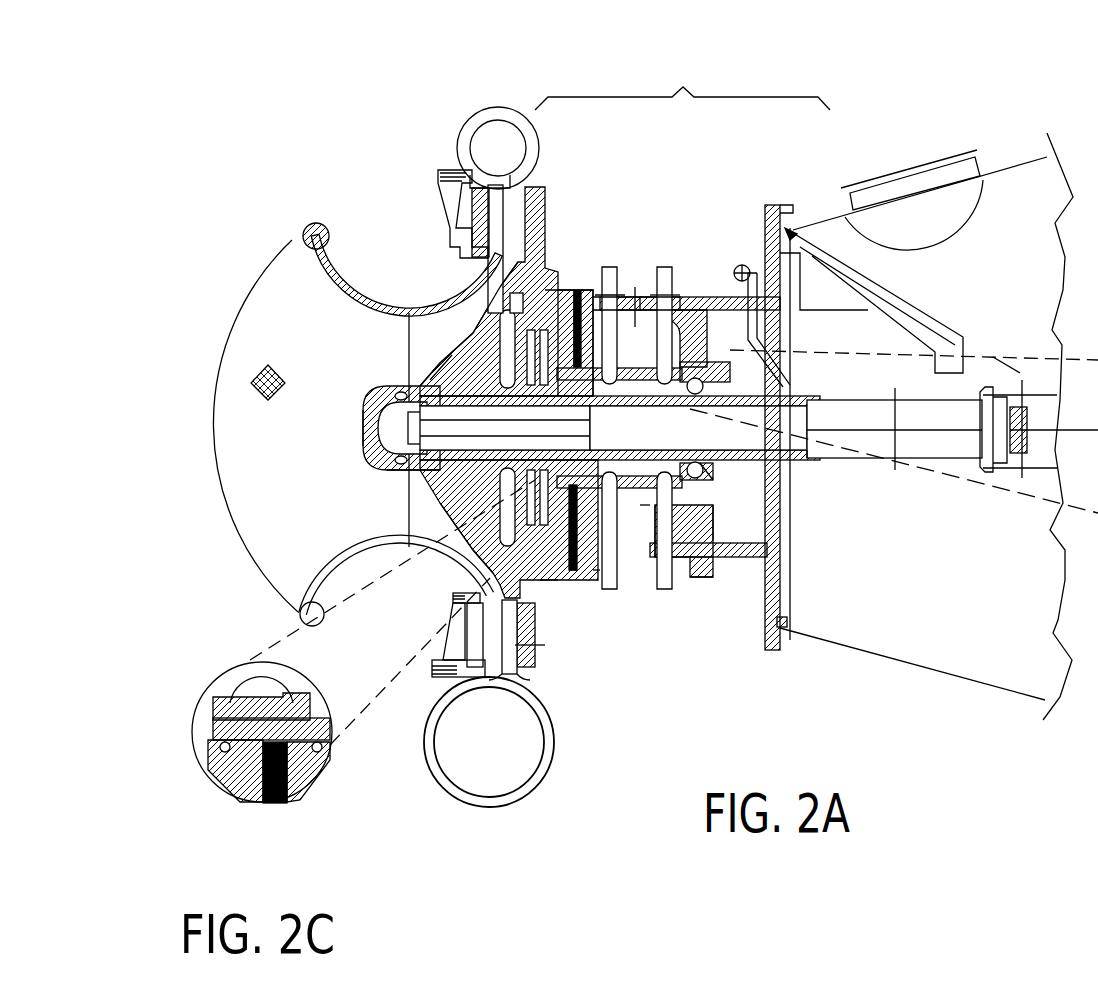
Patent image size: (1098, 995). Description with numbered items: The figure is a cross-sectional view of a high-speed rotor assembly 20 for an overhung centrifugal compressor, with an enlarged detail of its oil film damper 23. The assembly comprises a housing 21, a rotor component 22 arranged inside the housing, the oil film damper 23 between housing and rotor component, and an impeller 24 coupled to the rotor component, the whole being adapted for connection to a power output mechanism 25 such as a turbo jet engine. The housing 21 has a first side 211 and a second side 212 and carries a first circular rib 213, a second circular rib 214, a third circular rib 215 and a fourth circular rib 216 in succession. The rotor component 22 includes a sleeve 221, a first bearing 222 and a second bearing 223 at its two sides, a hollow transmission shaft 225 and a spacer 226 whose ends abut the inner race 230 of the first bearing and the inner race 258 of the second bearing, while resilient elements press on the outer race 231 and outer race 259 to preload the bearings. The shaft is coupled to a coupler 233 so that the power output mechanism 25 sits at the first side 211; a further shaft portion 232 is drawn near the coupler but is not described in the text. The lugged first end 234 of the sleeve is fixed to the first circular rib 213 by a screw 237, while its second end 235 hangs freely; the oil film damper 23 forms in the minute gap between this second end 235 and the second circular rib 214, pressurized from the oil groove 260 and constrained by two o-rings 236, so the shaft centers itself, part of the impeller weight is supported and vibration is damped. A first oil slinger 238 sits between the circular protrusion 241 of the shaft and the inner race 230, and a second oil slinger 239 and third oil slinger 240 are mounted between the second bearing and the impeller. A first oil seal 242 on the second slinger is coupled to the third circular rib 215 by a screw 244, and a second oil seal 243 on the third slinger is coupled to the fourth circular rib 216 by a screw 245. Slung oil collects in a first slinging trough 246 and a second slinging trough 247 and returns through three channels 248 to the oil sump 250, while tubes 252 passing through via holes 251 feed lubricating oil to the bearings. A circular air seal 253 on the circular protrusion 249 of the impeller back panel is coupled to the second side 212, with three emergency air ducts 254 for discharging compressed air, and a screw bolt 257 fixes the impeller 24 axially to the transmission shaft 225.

In FIG. 2A, the high-speed rotor assembly 20 is at (630, 745).
In FIG. 2A, the housing 21 is at (682, 79).
In FIG. 2A, the first side 211 is at (790, 232).
In FIG. 2A, the second side 212 is at (552, 283).
In FIG. 2A, the first circular rib 213 is at (702, 290).
In FIG. 2A, the second circular rib 214 is at (622, 290).
In FIG. 2C, the second circular rib 214 is at (300, 767).
In FIG. 2A, the third circular rib 215 is at (592, 293).
In FIG. 2A, the fourth circular rib 216 is at (568, 290).
In FIG. 2A, the rotor component 22 is at (703, 665).
In FIG. 2A, the sleeve 221 is at (697, 490).
In FIG. 2A, the first bearing 222 is at (705, 555).
In FIG. 2A, the second bearing 223 is at (548, 585).
In FIG. 2A, the transmission shaft 225 is at (373, 448).
In FIG. 2A, the spacer 226 is at (640, 560).
In FIG. 2C, the oil film damper 23 is at (248, 788).
In FIG. 2A, the inner race 230 is at (700, 490).
In FIG. 2A, the outer race 231 is at (790, 515).
In FIG. 2A, the shaft 232 is at (813, 463).
In FIG. 2A, the coupler 233 is at (947, 440).
In FIG. 2A, the first end 234 is at (800, 540).
In FIG. 2A, the second end 235 is at (525, 515).
In FIG. 2C, the second end 235 is at (230, 728).
In FIG. 2C, the o-rings 236 is at (208, 757).
In FIG. 2A, the screw 237 is at (780, 560).
In FIG. 2A, the first oil slinger 238 is at (720, 470).
In FIG. 2A, the second oil slinger 239 is at (500, 373).
In FIG. 2A, the impeller 24 is at (520, 483).
In FIG. 2A, the third oil slinger 240 is at (417, 377).
In FIG. 2A, the circular protrusion 241 is at (760, 478).
In FIG. 2A, the first oil seal 242 is at (467, 347).
In FIG. 2A, the second oil seal 243 is at (477, 373).
In FIG. 2A, the screw 244 is at (535, 645).
In FIG. 2A, the screw 245 is at (500, 585).
In FIG. 2A, the first slinging trough 246 is at (500, 320).
In FIG. 2A, the second slinging trough 247 is at (470, 322).
In FIG. 2A, the channels 248 is at (580, 557).
In FIG. 2A, the circular protrusion 249 is at (493, 555).
In FIG. 2A, the power output mechanism 25 is at (1007, 660).
In FIG. 2A, the oil sump 250 is at (700, 500).
In FIG. 2A, the via holes 251 is at (680, 300).
In FIG. 2A, the tubes 252 is at (660, 285).
In FIG. 2A, the circular air seal 253 is at (493, 313).
In FIG. 2A, the emergency air ducts 254 is at (565, 295).
In FIG. 2A, the screw bolt 257 is at (645, 495).
In FIG. 2A, the inner race 258 is at (405, 462).
In FIG. 2A, the outer race 259 is at (510, 500).
In FIG. 2A, the oil groove 260 is at (578, 290).
In FIG. 2C, the oil groove 260 is at (277, 805).